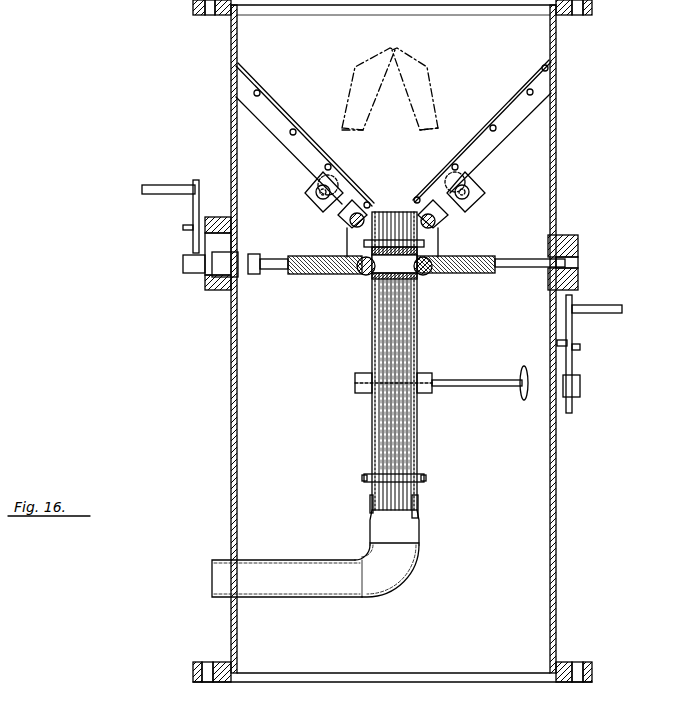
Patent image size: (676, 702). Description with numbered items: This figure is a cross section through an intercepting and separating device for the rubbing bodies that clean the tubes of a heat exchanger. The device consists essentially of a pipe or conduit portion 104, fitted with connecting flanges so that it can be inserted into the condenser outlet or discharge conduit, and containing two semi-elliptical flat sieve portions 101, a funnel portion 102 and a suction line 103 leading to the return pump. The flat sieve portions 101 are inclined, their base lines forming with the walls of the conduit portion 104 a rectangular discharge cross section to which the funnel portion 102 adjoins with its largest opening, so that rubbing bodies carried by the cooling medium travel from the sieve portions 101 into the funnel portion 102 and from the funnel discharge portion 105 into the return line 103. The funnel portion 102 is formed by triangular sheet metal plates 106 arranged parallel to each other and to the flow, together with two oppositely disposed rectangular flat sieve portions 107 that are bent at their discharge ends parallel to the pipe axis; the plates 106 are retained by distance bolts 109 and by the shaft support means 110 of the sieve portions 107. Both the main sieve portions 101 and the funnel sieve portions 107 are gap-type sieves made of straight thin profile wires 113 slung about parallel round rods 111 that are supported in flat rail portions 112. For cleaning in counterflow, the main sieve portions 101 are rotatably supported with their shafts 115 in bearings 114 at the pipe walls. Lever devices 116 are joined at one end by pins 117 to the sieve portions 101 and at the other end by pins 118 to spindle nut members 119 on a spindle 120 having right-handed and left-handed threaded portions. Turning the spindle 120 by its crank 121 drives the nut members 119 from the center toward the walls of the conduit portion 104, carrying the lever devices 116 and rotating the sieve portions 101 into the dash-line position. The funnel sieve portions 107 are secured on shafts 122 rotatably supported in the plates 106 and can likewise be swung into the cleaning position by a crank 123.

The flat sieve portion 101 is at (278, 118).
The funnel portion 102 is at (400, 361).
The suction line 103 is at (300, 578).
The conduit portion 104 is at (556, 558).
The funnel discharge portion 105 is at (420, 532).
The funnel sheet metal plate 106 is at (372, 358).
The rectangular flat sieve portion 107 is at (392, 440).
The distance bolt 109 is at (424, 245).
The shaft support means 110 is at (360, 393).
The round rod 111 is at (258, 97).
The flat rail portion 112 is at (484, 148).
The profile wire 113 is at (330, 147).
The bearing 114 is at (311, 181).
The shaft 115 is at (314, 204).
The lever device 116 is at (348, 244).
The pin 117 is at (343, 222).
The pin 118 is at (362, 282).
The spindle nut member 119 is at (360, 278).
The spindle 120 is at (278, 270).
The crank 121 is at (190, 215).
The shaft 122 is at (475, 386).
The crank 123 is at (576, 332).